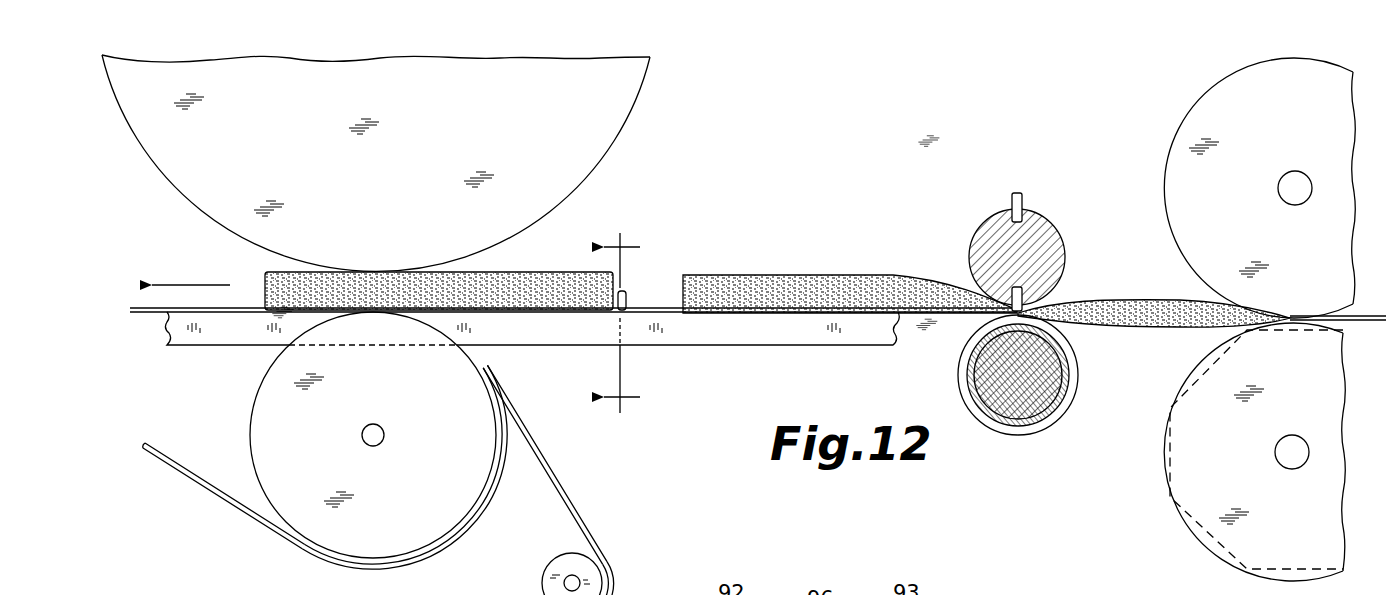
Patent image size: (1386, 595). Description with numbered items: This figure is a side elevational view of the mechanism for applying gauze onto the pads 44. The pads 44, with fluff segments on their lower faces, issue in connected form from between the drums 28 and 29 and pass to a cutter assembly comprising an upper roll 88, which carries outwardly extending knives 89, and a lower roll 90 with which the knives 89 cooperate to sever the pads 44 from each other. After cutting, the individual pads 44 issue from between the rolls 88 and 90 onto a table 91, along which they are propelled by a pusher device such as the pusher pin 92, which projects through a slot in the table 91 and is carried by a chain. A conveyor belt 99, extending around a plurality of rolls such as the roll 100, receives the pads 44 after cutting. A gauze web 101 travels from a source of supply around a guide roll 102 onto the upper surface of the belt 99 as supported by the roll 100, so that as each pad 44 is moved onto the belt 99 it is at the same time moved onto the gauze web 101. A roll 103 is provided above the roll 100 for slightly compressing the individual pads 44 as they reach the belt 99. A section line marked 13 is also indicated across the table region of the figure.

The roll 103 is at (630, 99).
The pads 44 is at (520, 272).
The section line 13- 13 is at (639, 323).
The pusher pin 92 is at (626, 293).
The table 91 is at (737, 340).
The conveyor belt 99 is at (208, 313).
The roll 100 is at (474, 495).
The gauze web 101 is at (544, 456).
The guide roll 102 is at (541, 580).
The upper roll 88 is at (1055, 231).
The knives 89 is at (1022, 192).
The lower roll 90 is at (1017, 425).
The drum 28 is at (1222, 94).
The drum 29 is at (1210, 548).